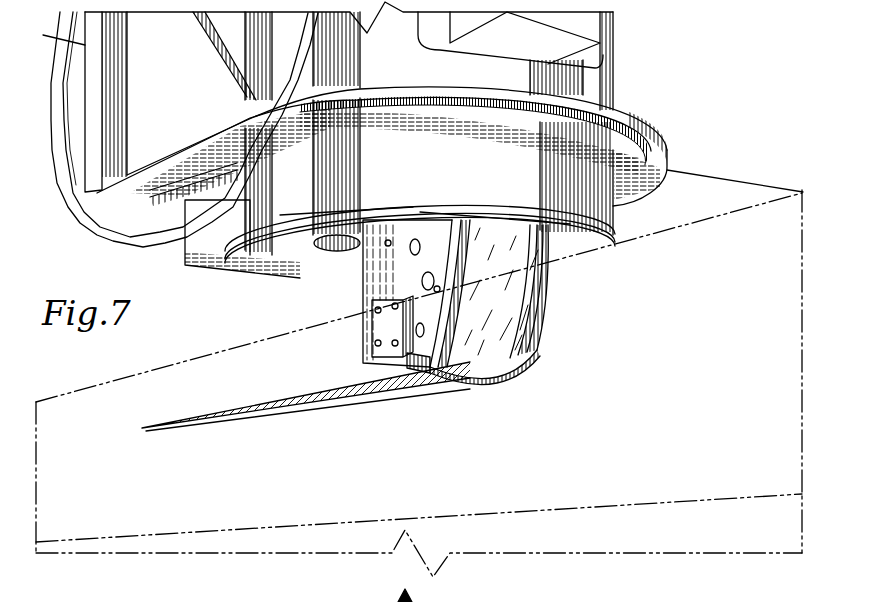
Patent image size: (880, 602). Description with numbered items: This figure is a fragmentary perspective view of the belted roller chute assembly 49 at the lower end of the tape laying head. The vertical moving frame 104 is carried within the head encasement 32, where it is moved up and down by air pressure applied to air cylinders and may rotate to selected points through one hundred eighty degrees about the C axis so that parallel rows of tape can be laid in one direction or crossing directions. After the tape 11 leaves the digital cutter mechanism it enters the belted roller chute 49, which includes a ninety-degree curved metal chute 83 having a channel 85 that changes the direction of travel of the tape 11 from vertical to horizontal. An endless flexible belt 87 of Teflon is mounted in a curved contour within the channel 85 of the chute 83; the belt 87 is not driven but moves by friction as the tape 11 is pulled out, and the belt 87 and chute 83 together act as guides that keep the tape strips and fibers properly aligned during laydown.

The head encasement 32 is at (630, 68).
The belted roller chute assembly 49 is at (535, 324).
The vertical moving frame 104 is at (415, 290).
The endless flexible belt 87 is at (513, 363).
The channel 85 is at (458, 380).
The curved metal chute 83 is at (507, 370).
The tape 11 is at (343, 397).